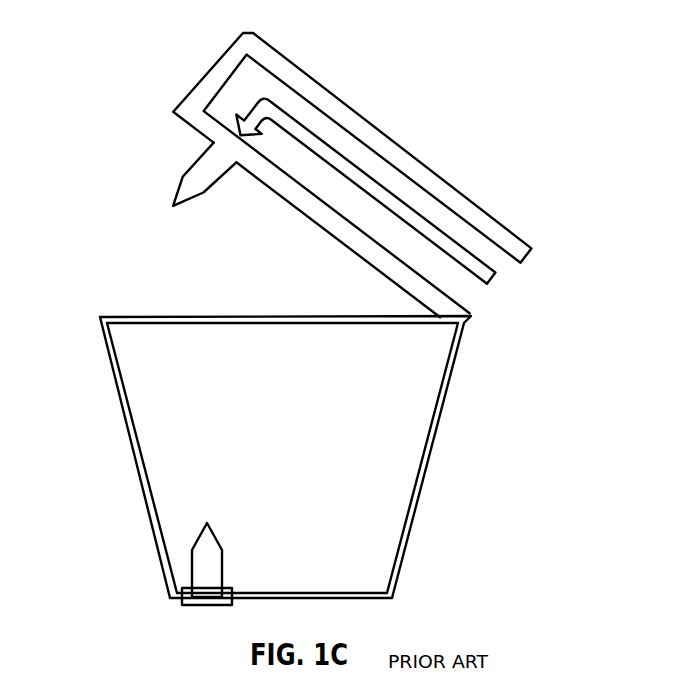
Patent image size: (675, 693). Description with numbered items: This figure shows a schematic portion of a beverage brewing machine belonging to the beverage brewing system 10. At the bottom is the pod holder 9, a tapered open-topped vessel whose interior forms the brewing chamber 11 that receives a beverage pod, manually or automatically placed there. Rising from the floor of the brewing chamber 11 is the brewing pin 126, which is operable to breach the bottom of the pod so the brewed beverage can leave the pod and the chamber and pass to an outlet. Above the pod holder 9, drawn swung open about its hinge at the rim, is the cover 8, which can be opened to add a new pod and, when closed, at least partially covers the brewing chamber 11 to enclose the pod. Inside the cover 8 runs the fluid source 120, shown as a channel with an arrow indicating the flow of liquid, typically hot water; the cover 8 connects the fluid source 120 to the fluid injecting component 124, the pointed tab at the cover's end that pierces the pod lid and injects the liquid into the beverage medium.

The cover 8 is at (397, 137).
The pod holder 9 is at (254, 461).
The beverage brewing system 10 is at (319, 169).
The brewing chamber 11 is at (168, 467).
The fluid source 120 is at (508, 283).
The fluid injecting component 124 is at (193, 158).
The brewing pin 126 is at (198, 607).